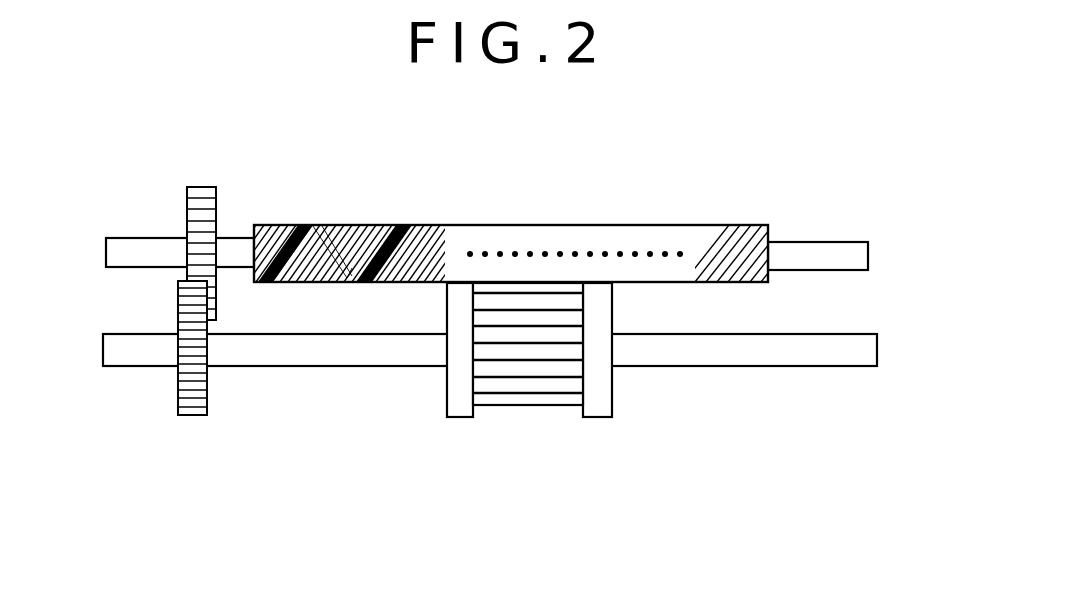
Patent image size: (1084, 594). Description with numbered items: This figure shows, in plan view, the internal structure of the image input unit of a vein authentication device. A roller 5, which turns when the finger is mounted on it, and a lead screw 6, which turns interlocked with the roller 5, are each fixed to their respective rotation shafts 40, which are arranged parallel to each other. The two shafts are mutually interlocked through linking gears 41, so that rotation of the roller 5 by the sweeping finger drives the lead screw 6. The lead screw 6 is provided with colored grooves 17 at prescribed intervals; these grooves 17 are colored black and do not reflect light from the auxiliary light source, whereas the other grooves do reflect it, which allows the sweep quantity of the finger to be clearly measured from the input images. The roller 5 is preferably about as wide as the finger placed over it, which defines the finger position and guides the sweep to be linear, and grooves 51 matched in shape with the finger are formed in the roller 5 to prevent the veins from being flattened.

The rotation shafts 40 is at (868, 256).
The linking gears 41 is at (178, 323).
The lead screw 6 is at (768, 226).
The colored grooves 17 is at (407, 225).
The roller 5 is at (612, 395).
The grooves 51 is at (516, 393).